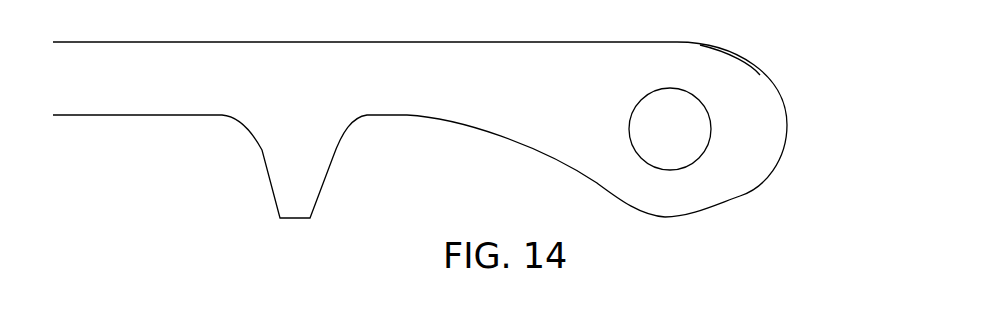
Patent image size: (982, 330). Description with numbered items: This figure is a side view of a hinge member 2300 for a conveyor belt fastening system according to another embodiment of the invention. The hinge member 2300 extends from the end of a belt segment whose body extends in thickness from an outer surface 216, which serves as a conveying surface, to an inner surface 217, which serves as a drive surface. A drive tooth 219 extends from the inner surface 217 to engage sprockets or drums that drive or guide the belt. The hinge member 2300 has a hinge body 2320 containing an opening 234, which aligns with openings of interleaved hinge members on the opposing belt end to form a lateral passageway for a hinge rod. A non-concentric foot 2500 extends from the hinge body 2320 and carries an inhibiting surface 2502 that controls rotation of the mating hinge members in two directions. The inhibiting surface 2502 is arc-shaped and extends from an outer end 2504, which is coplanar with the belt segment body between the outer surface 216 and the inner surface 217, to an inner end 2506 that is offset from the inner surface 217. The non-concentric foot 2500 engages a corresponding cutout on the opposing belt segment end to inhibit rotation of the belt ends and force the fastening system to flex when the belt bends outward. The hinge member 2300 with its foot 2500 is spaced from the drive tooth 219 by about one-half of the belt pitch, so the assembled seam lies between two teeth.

The outer surface 216 is at (535, 42).
The inner surface 217 is at (430, 123).
The teeth 219 is at (319, 147).
The opening 234 is at (689, 145).
The hinge member 2300 is at (732, 42).
The hinge body 2320 is at (675, 70).
The non-concentric foot 2500 is at (768, 122).
The inhibiting surface 2502 is at (787, 125).
The outer end 2504 is at (752, 65).
The inner end 2506 is at (738, 197).